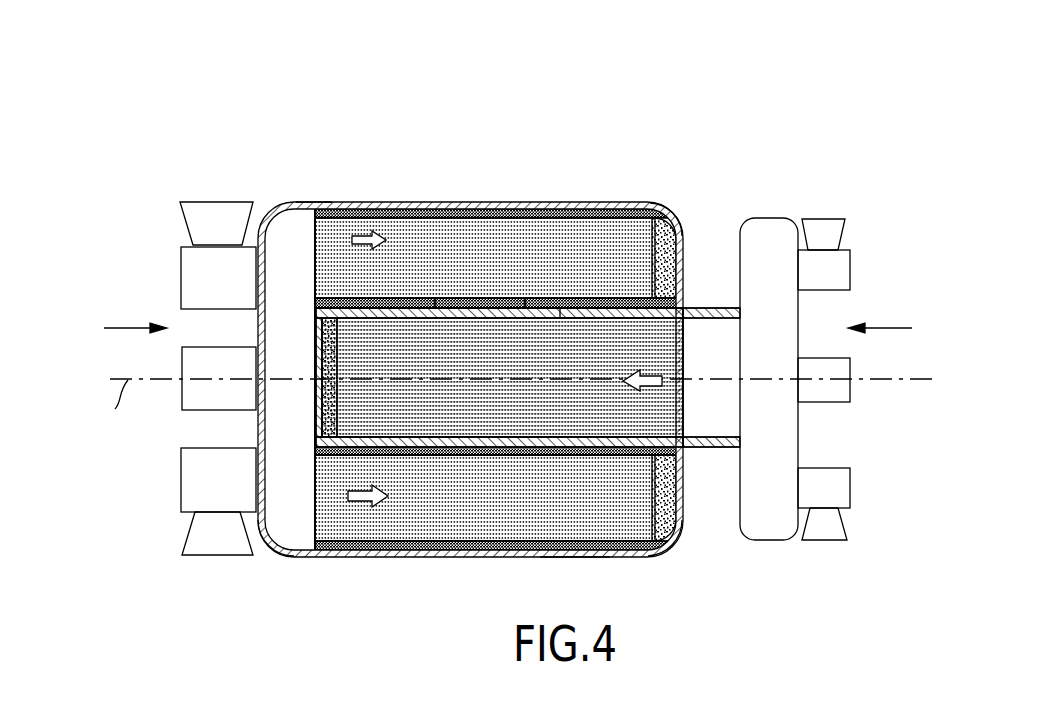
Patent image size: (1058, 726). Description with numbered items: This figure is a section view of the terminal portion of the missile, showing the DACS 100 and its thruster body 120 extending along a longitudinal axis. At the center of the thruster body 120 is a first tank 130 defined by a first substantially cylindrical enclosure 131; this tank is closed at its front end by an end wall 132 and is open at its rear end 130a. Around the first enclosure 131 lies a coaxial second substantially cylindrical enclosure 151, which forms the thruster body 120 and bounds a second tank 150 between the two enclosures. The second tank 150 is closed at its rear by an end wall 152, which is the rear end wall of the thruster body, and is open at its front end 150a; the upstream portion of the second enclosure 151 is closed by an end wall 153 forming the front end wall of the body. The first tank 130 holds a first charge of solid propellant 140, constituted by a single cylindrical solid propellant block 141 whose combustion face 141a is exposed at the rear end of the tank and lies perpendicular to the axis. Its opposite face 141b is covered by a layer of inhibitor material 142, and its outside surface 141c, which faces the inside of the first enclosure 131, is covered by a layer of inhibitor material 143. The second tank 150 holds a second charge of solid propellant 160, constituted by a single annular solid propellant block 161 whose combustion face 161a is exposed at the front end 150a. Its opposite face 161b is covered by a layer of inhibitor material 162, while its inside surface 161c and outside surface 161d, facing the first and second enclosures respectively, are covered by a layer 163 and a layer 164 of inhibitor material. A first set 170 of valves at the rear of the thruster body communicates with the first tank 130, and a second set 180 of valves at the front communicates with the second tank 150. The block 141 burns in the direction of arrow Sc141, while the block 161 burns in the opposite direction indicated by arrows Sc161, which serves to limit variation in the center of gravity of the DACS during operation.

The DACS 100 is at (386, 157).
The thruster body 120 is at (472, 203).
The first tank 130 is at (400, 400).
The rear end 130a is at (684, 452).
The first substantially cylindrical enclosure 131 is at (375, 307).
The end wall 132 is at (315, 331).
The first charge of solid propellant 140 is at (577, 441).
The solid propellant block 141 is at (523, 414).
The combustion face 141a is at (686, 343).
The face 141b is at (318, 413).
The outside surface 141c is at (495, 305).
The layer of inhibitor material 142 is at (318, 368).
The layer of inhibitor material 143 is at (440, 312).
The second tank 150 is at (623, 232).
The front end 150a is at (313, 203).
The second substantially cylindrical enclosure 151 is at (571, 203).
The end wall 152 is at (683, 247).
The end wall 153 is at (262, 558).
The second charge of solid propellant 160 is at (408, 543).
The solid propellant block 161 is at (453, 521).
The combustion face 161a is at (315, 285).
The face 161b is at (665, 213).
The inside surface 161c is at (547, 305).
The outside surface 161d is at (519, 545).
The layer of inhibitor material 162 is at (677, 527).
The layer of inhibitor material 163 is at (600, 312).
The layer of inhibitor material 164 is at (575, 550).
The first set of valves 170 is at (812, 552).
The second set of valves 180 is at (178, 567).
The burn direction arrow Sc161 is at (357, 238).
The burn direction arrow Sc141 is at (653, 388).